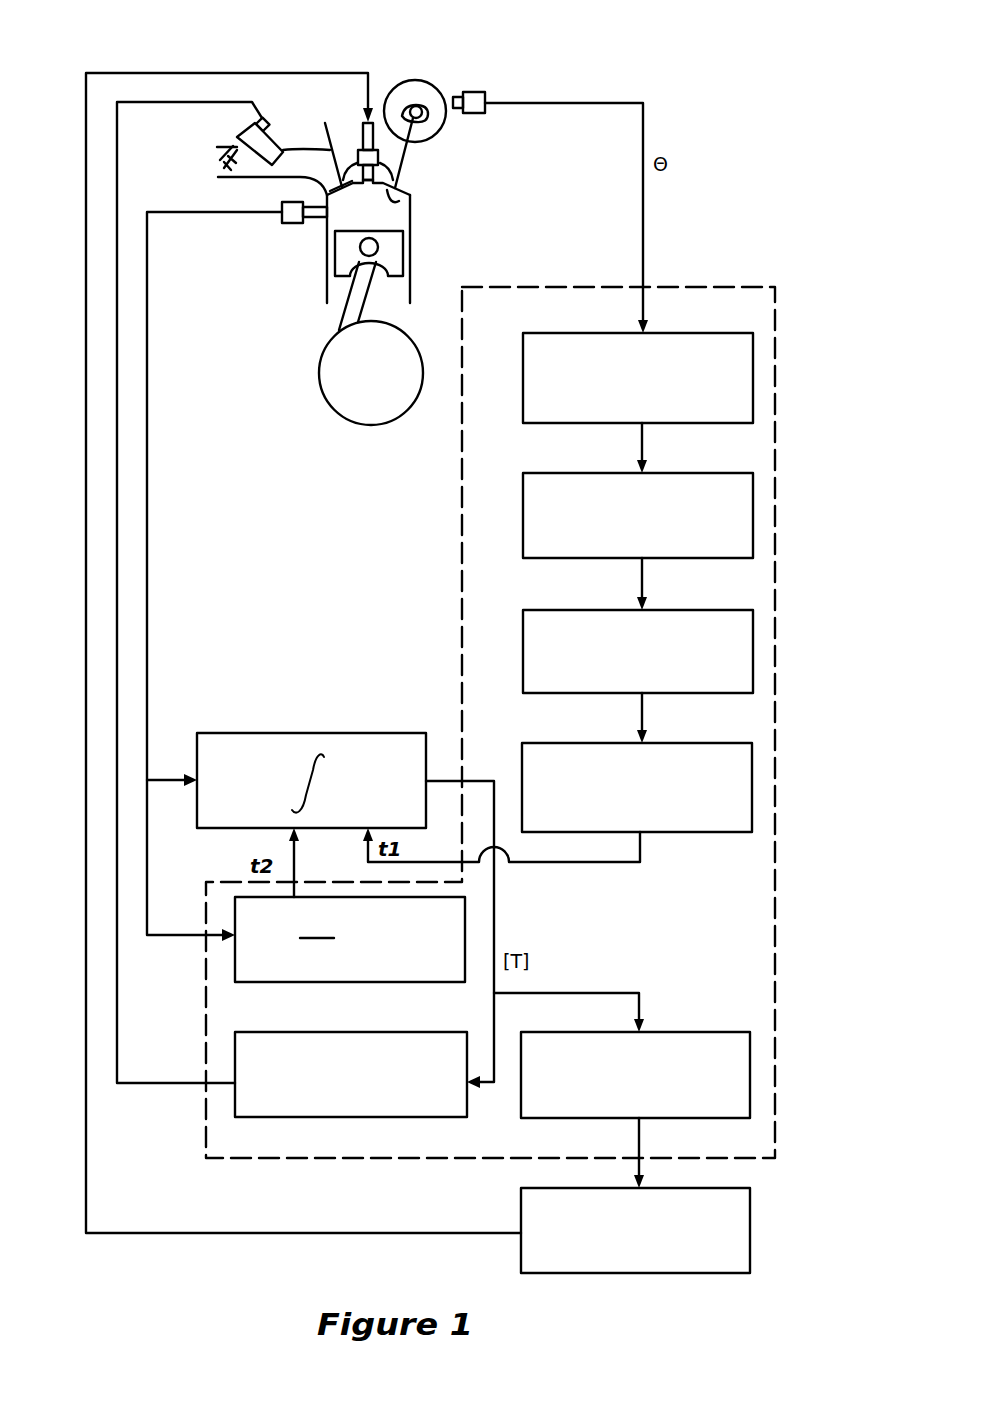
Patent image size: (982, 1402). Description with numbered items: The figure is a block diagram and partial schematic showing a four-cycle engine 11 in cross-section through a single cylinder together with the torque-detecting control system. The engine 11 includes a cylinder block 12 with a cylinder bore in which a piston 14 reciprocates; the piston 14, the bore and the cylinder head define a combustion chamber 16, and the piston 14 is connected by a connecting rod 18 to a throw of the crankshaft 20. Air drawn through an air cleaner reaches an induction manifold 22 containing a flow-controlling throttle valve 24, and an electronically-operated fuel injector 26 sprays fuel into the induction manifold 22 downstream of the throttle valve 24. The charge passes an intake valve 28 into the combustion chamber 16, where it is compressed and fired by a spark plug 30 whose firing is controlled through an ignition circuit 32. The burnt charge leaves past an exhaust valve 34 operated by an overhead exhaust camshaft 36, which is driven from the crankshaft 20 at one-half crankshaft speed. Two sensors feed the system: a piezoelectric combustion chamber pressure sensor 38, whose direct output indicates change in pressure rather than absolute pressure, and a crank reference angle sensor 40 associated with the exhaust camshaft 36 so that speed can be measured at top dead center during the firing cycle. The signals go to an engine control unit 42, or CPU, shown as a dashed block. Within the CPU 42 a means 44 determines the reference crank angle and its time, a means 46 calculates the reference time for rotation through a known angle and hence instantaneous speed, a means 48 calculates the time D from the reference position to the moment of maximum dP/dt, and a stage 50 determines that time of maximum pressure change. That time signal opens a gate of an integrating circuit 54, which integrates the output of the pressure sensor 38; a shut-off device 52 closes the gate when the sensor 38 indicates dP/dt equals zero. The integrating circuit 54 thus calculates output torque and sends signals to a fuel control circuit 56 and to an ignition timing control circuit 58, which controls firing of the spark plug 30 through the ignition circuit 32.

The four-cycle engine 11 is at (470, 69).
The cylinder block 12 is at (412, 212).
The piston 14 is at (407, 268).
The combustion chamber 16 is at (393, 220).
The connecting rod 18 is at (338, 313).
The crankshaft 20 is at (362, 427).
The induction manifold 22 is at (300, 163).
The throttle valve 24 is at (230, 155).
The fuel injector 26 is at (277, 140).
The intake valve 28 is at (350, 195).
The spark plug 30 is at (362, 131).
The ignition circuit 32 is at (752, 1253).
The exhaust valve 34 is at (393, 203).
The exhaust camshaft 36 is at (410, 104).
The combustion chamber pressure sensor 38 is at (287, 225).
The crank reference angle sensor 40 is at (485, 90).
The engine control unit 42 is at (677, 287).
The reference crank angle determining means 44 is at (753, 387).
The reference time calculating means 46 is at (753, 515).
The time D calculating means 48 is at (753, 643).
The t1 determining stage 50 is at (752, 775).
The shut-off device 52 is at (235, 960).
The integrating circuit 54 is at (302, 732).
The fuel control circuit 56 is at (235, 1098).
The ignition timing control circuit 58 is at (723, 1032).